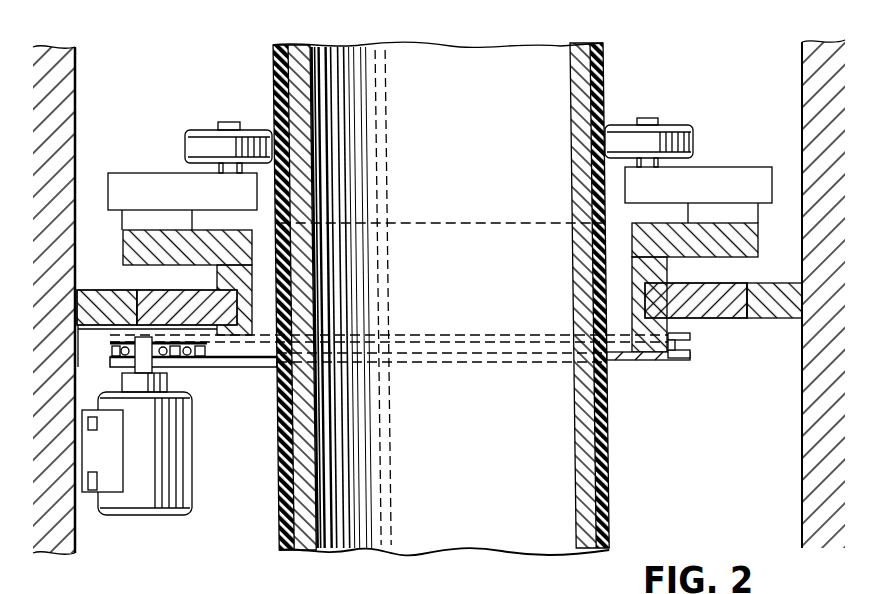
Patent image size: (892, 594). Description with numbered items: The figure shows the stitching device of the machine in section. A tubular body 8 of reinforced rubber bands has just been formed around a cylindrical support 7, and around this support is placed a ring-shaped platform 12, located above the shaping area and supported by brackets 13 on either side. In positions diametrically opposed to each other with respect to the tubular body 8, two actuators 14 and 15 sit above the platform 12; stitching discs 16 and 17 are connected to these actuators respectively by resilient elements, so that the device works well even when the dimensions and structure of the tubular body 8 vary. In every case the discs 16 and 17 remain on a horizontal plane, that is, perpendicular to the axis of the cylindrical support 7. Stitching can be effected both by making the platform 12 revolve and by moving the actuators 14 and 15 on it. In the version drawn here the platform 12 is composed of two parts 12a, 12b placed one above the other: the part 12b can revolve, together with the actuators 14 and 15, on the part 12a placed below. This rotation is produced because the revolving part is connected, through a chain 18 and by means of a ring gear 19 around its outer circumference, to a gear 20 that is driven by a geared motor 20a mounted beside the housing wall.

The cylindrical support 7 is at (460, 318).
The tubular body 8 is at (612, 500).
The ring-shaped platform 12 is at (154, 220).
The lower platform part 12a is at (733, 282).
The upper platform part 12b is at (124, 259).
The brackets 13 is at (117, 292).
The actuator 14 is at (713, 172).
The actuator 15 is at (161, 182).
The stitching disc 16 is at (669, 125).
The stitching disc 17 is at (203, 130).
The chain 18 is at (680, 362).
The ring gear 19 is at (690, 346).
The gear 20 is at (195, 358).
The geared motor 20a is at (168, 498).